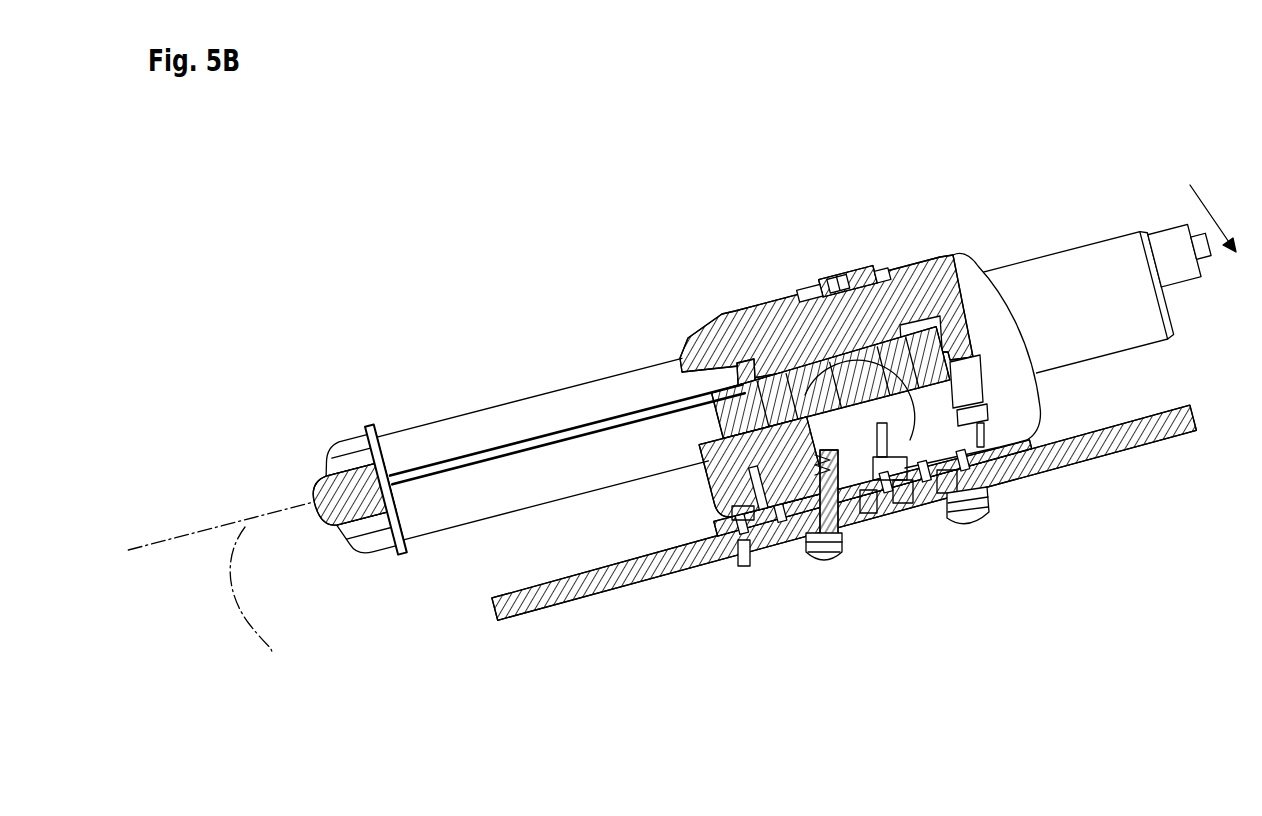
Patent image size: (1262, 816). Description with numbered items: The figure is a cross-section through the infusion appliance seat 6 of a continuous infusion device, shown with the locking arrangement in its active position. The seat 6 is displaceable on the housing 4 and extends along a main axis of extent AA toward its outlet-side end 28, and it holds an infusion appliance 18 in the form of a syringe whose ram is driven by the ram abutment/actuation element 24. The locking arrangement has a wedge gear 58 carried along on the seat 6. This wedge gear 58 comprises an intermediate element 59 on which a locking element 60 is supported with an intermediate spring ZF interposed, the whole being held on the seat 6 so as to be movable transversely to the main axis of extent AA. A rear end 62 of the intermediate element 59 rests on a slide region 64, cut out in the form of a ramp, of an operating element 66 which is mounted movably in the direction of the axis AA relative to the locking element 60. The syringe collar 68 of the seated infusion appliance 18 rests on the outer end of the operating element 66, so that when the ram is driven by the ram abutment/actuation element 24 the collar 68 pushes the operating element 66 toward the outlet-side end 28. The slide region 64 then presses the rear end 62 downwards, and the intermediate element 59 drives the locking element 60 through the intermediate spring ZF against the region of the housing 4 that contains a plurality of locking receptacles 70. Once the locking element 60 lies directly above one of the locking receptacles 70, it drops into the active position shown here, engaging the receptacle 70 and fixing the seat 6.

The housing 4 is at (638, 583).
The infusion appliance seat 6 is at (807, 292).
The infusion appliance 18 is at (1073, 260).
The ram abutment/actuation element 24 is at (323, 458).
The outlet-side end 28 is at (1195, 203).
The wedge gear 58 is at (718, 470).
The intermediate element 59 is at (885, 492).
The locking element 60 is at (870, 527).
The rear end 62 is at (907, 478).
The slide region 64 is at (930, 350).
The operating element 66 is at (805, 400).
The syringe collar 68 is at (690, 345).
The locking receptacles 70 is at (745, 565).
The intermediate spring ZF is at (795, 498).
The main axis of extent AA is at (220, 591).